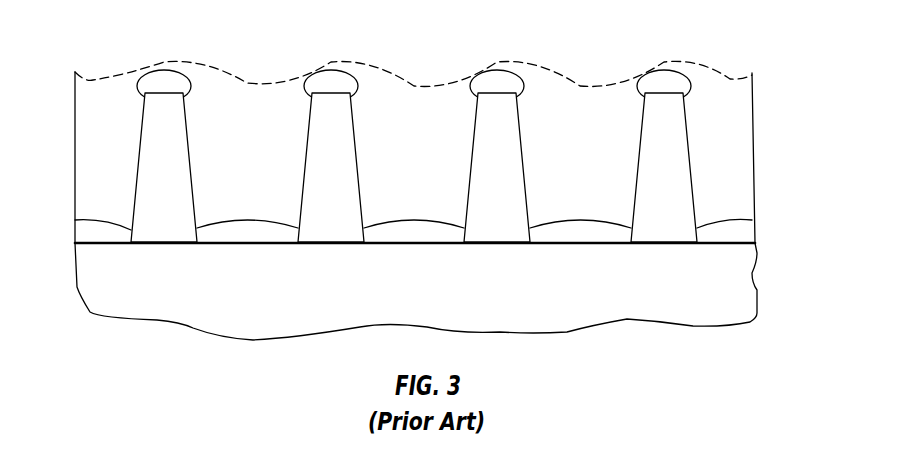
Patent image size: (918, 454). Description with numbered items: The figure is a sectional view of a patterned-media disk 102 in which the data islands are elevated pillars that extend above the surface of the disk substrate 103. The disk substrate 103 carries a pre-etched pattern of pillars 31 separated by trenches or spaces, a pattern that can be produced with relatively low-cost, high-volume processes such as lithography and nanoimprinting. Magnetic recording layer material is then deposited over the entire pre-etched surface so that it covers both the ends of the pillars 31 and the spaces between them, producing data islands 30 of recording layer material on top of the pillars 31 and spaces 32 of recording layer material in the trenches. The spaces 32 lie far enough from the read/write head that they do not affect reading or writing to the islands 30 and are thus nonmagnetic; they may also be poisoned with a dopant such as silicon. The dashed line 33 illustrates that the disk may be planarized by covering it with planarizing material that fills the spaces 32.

The data islands 30 is at (165, 77).
The pillars 31 is at (175, 152).
The spaces of magnetic recording layer material 32 is at (105, 225).
The dashed line 33 is at (240, 83).
The patterned-media disk 102 is at (766, 108).
The disk substrate 103 is at (685, 307).